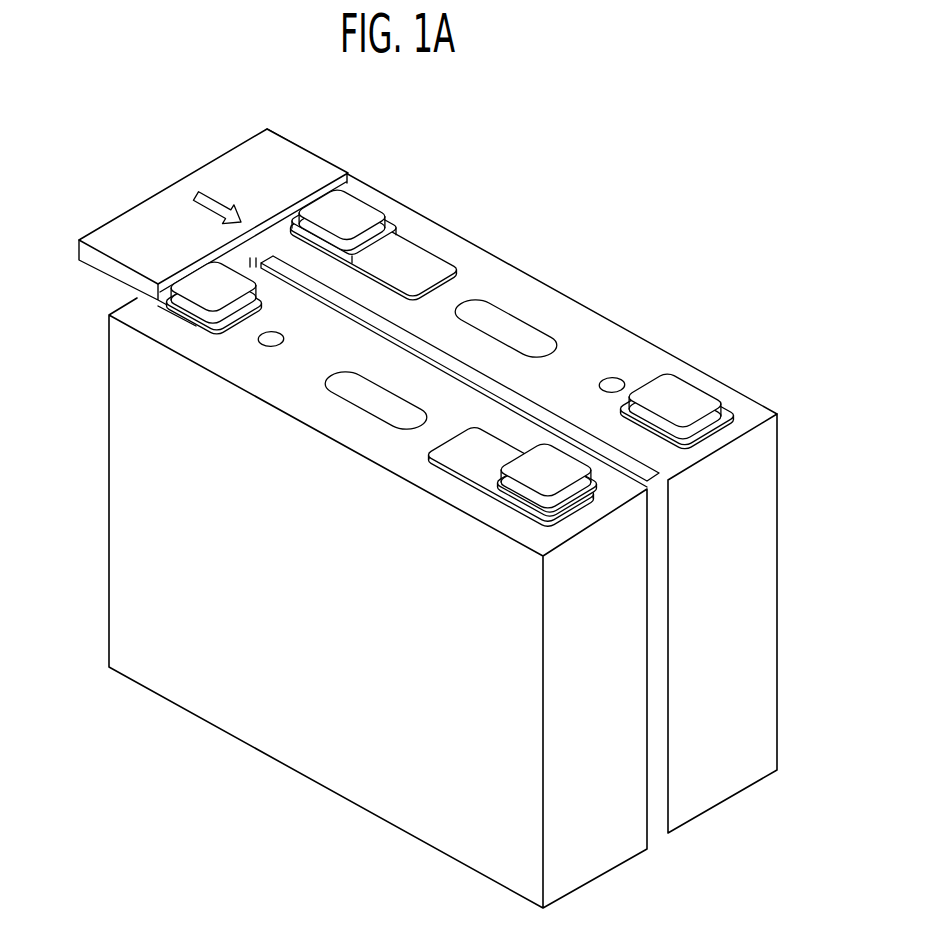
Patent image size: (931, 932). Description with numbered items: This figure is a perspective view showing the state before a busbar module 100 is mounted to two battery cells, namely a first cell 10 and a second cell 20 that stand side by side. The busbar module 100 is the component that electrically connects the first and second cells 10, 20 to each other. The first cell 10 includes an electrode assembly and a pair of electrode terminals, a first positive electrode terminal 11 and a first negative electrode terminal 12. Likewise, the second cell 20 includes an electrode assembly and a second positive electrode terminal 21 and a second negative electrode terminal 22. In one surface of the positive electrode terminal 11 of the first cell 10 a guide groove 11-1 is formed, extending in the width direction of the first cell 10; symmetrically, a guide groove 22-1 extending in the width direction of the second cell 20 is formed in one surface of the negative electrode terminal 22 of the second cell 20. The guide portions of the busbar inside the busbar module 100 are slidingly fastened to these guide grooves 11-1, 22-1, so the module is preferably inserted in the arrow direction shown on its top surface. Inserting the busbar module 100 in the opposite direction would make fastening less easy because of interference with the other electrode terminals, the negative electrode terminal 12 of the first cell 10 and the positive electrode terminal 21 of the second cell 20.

The busbar module 100 is at (298, 142).
The first cell 10 is at (632, 584).
The second cell 20 is at (750, 503).
The (1-1)-th electrode terminal 11 is at (210, 296).
The (1-1)-th guide groove 11-1 is at (215, 322).
The (1-2)-th electrode terminal 12 is at (547, 478).
The (2-1)-th electrode terminal 21 is at (675, 398).
The (2-2)-th electrode terminal 22 is at (356, 212).
The (2-2)-th guide groove 22-1 is at (385, 240).